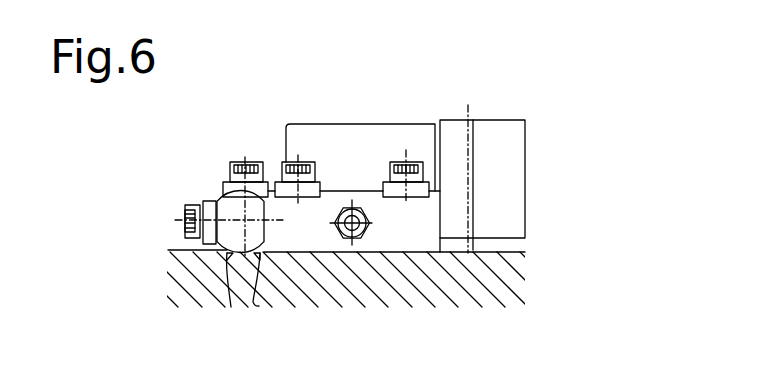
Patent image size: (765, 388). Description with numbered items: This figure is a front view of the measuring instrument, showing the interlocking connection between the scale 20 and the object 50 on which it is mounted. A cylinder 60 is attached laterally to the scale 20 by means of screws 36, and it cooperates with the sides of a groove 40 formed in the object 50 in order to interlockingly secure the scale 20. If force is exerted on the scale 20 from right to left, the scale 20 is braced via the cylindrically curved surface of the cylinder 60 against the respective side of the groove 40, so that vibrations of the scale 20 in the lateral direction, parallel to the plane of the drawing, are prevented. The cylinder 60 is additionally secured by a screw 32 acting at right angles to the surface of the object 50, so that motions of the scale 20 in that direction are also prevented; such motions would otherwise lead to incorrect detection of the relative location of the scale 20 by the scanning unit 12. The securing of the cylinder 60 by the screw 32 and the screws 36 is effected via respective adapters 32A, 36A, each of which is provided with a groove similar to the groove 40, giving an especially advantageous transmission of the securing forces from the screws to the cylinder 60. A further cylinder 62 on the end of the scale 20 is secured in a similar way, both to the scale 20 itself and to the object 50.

The scanning unit 12 is at (498, 130).
The scale 20 is at (347, 132).
The screw 32 is at (240, 162).
The adapter 32A is at (225, 192).
The screw 36 is at (188, 208).
The adapter 36A is at (218, 203).
The groove 40 is at (231, 302).
The object 50 is at (497, 278).
The cylinder 60 is at (243, 225).
The cylinder 62 is at (404, 240).